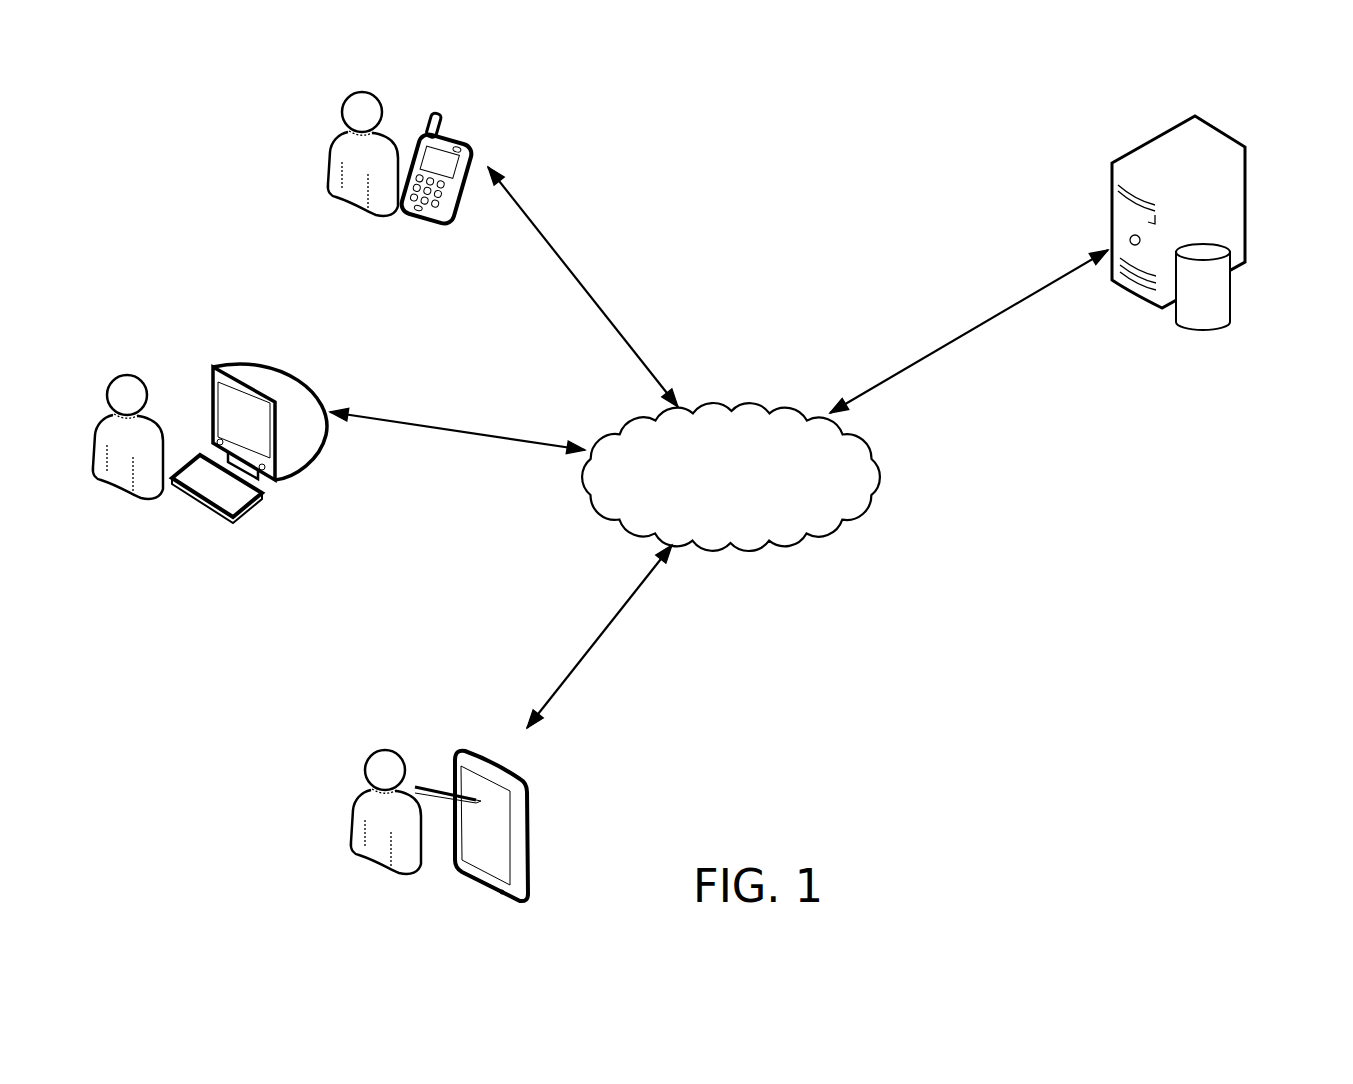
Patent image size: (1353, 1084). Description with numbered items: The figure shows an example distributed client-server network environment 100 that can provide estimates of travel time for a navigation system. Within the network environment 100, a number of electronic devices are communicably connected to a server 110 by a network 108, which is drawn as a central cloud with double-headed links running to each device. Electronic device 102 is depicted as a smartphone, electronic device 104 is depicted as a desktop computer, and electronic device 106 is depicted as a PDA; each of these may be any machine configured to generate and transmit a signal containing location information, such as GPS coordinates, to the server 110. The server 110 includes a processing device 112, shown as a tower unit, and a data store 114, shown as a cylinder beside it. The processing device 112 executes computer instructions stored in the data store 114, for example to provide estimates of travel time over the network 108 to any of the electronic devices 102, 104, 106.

The network environment 100 is at (868, 118).
The electronic device 102 is at (475, 143).
The electronic device 104 is at (293, 382).
The electronic device 106 is at (522, 780).
The network 108 is at (730, 402).
The server 110 is at (1109, 362).
The processing device 112 is at (1222, 135).
The data store 114 is at (1232, 322).